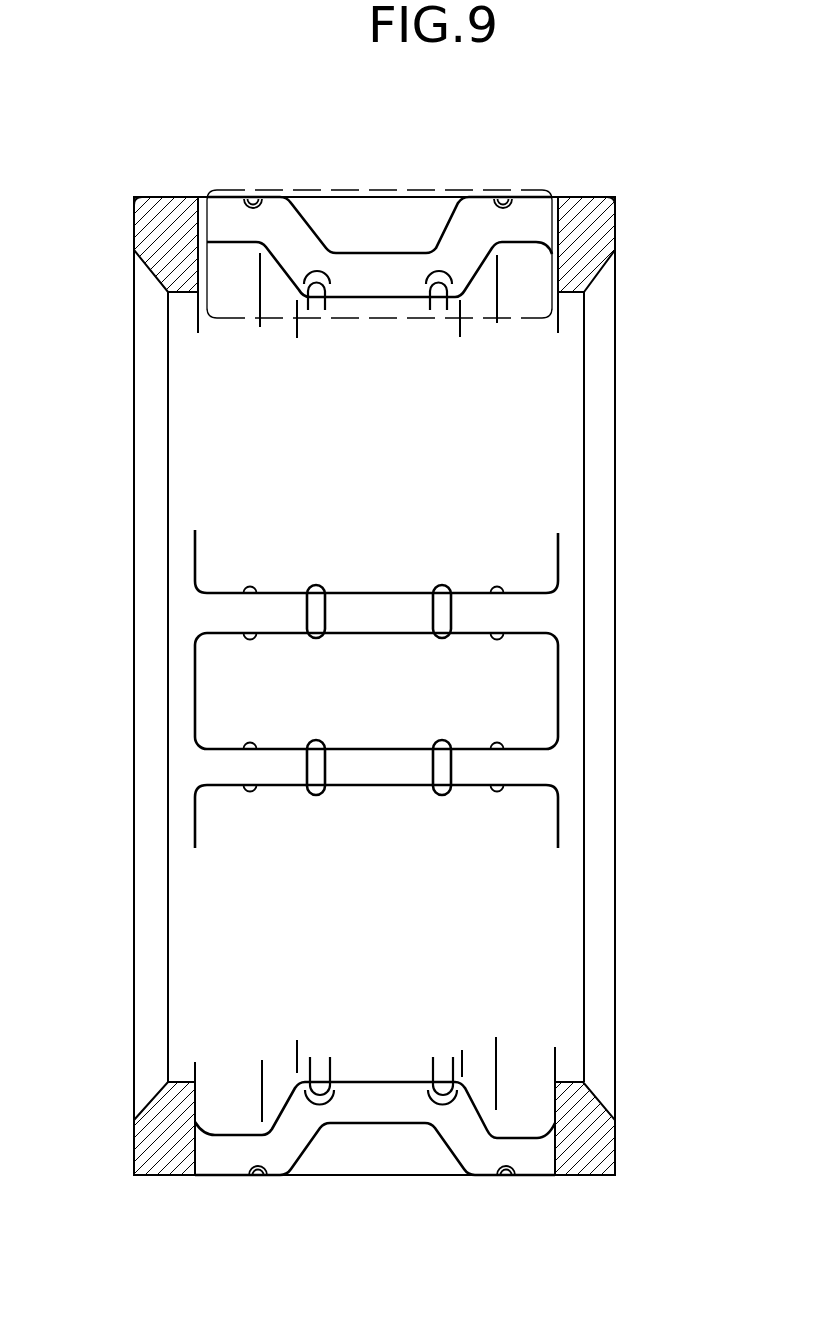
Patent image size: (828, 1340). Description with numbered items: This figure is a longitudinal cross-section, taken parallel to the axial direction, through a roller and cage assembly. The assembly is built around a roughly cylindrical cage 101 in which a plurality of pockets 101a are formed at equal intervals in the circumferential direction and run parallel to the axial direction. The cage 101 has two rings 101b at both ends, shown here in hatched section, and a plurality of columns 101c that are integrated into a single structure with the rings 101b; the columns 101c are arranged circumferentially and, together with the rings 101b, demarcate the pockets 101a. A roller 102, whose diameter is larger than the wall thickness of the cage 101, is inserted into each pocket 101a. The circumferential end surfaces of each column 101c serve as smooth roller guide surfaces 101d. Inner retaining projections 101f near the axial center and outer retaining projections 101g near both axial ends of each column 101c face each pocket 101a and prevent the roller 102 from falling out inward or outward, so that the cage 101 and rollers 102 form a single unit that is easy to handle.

The cage 101 is at (632, 252).
The pocket 101a is at (433, 732).
The ring 101b is at (158, 215).
The column 101c is at (378, 246).
The roller guide surface 101d is at (297, 216).
The inner retaining projection 101f is at (428, 283).
The outer retaining projection 101g is at (218, 205).
The roller 102 is at (530, 303).